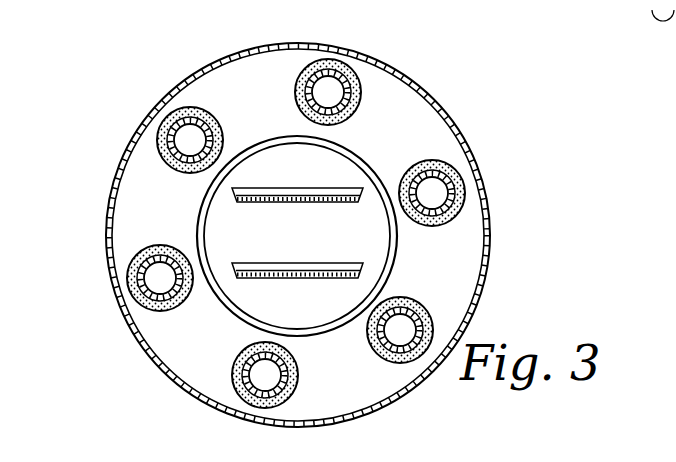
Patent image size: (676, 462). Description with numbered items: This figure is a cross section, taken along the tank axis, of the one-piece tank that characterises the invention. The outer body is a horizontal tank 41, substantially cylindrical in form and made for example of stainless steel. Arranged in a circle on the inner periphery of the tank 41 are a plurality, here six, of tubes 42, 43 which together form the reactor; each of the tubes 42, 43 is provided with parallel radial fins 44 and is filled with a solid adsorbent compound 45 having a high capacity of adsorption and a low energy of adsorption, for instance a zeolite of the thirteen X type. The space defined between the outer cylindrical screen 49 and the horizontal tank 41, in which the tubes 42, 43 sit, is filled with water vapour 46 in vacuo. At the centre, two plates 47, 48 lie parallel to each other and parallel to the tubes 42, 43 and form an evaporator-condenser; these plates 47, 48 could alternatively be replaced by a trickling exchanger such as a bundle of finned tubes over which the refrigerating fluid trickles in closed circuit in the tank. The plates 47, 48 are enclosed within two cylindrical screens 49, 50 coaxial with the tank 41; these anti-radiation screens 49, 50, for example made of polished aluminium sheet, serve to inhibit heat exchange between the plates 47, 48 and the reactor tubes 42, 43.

The horizontal tank 41 is at (433, 104).
The tube 42 is at (140, 277).
The tube 43 is at (342, 82).
The parallel radial fins 44 is at (447, 165).
The solid adsorbent compound 45 is at (167, 153).
The water vapour 46 is at (330, 235).
The plate 47 is at (280, 204).
The plate 48 is at (280, 280).
The outer cylindrical screen 49 is at (353, 153).
The cylindrical screen 50 is at (304, 211).